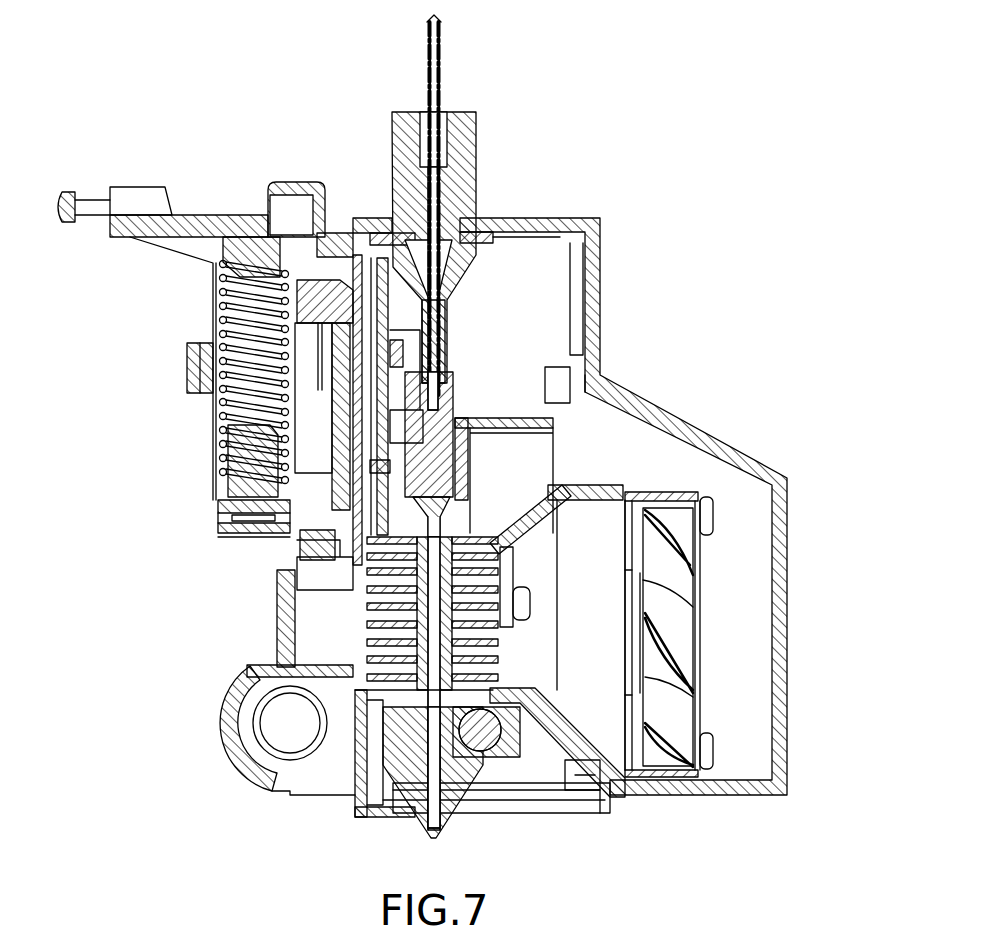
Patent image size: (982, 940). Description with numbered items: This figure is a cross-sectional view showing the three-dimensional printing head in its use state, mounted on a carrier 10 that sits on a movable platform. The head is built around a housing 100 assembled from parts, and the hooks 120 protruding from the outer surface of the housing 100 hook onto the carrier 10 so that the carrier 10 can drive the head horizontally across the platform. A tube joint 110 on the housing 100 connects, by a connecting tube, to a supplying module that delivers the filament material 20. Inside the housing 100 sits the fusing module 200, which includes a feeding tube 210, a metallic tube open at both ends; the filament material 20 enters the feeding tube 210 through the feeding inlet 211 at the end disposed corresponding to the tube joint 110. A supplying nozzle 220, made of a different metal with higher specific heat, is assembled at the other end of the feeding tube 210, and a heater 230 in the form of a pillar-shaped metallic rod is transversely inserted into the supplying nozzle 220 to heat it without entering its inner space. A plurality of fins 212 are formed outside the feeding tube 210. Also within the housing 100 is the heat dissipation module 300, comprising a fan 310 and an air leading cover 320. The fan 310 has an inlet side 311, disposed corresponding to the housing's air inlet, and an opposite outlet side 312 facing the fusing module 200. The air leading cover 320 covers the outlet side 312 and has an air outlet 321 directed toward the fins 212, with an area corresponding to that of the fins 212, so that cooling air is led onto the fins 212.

The carrier 10 is at (222, 200).
The filament material 20 is at (444, 47).
The housing 100 is at (530, 218).
The tube joint 110 is at (405, 115).
The hooks 120 is at (310, 275).
The fusing module 200 is at (370, 773).
The feeding tube 210 is at (420, 598).
The feeding inlet 211 is at (300, 497).
The fins 212 is at (373, 625).
The supplying nozzle 220 is at (472, 800).
The heater 230 is at (485, 738).
The heat dissipation module 300 is at (715, 705).
The fan 310 is at (680, 648).
The inlet side 311 is at (698, 557).
The outlet side 312 is at (603, 490).
The air leading cover 320 is at (600, 800).
The air outlet 321 is at (579, 765).